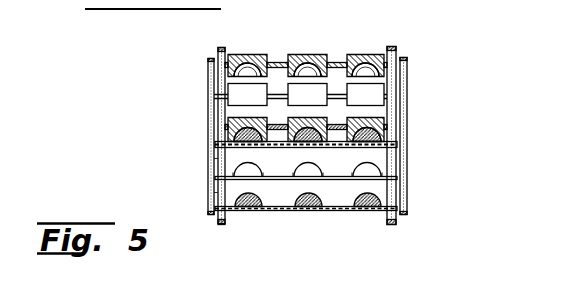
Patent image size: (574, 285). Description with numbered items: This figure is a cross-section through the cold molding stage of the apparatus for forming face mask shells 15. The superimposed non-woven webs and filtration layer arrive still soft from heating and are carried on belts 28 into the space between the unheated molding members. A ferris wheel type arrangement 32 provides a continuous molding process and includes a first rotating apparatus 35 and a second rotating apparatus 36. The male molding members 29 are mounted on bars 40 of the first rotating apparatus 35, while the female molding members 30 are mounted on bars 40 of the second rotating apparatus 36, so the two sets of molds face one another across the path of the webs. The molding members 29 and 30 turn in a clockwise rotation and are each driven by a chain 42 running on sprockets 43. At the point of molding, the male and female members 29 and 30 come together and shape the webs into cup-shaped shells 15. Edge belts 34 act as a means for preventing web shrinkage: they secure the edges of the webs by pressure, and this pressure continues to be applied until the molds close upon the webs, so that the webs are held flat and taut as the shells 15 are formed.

The shell 15 is at (377, 121).
The belt 28 is at (392, 158).
The male molding member 29 is at (238, 167).
The female molding member 30 is at (308, 56).
The ferris wheel type arrangement 32 is at (377, 40).
The edge belt 34 is at (394, 53).
The first rotating apparatus 35 is at (433, 169).
The second rotating apparatus 36 is at (430, 98).
The bar 40 is at (278, 63).
The chain 42 is at (404, 60).
The sprocket 43 is at (210, 89).